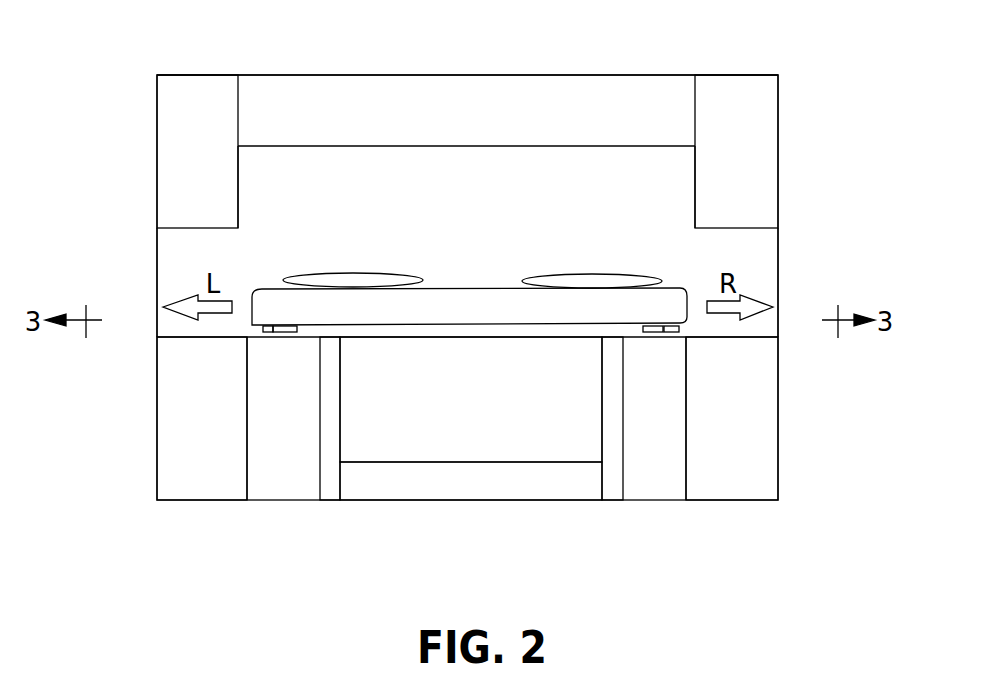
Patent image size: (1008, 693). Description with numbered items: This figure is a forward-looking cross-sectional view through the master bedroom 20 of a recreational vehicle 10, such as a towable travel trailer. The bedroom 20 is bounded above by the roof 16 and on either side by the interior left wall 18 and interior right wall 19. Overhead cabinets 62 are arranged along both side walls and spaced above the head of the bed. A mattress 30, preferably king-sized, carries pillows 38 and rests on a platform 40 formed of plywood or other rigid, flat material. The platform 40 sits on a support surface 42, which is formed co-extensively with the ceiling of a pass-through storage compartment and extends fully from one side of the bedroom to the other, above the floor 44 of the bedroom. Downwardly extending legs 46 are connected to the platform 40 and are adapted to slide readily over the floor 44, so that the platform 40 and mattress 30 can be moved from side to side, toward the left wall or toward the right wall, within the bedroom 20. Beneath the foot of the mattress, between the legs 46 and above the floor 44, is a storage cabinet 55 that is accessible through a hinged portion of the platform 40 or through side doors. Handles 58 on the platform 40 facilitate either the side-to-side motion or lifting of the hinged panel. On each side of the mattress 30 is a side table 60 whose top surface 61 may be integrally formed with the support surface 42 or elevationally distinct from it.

The recreational vehicle 10 is at (820, 120).
The roof 16 is at (367, 75).
The interior left wall 18 is at (157, 258).
The interior right wall 19 is at (778, 252).
The master bedroom 20 is at (531, 156).
The mattress 30 is at (479, 319).
The pillows 38 is at (348, 280).
The platform 40 is at (358, 325).
The support surface 42 is at (257, 338).
The floor 44 is at (423, 500).
The downwardly extending leg 46 is at (322, 382).
The storage cabinet 55 is at (473, 396).
The handle 58 is at (285, 332).
The side table 60 is at (213, 441).
The top surface of side table 61 is at (197, 338).
The overhead cabinet 62 is at (211, 166).